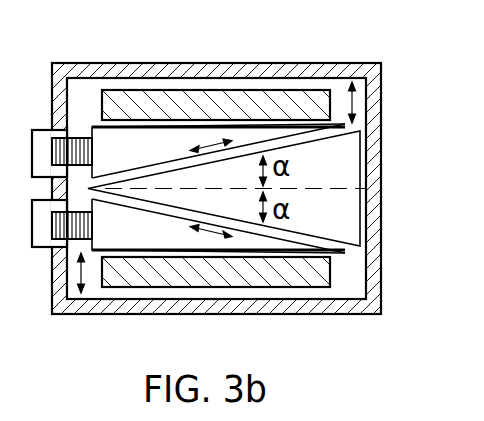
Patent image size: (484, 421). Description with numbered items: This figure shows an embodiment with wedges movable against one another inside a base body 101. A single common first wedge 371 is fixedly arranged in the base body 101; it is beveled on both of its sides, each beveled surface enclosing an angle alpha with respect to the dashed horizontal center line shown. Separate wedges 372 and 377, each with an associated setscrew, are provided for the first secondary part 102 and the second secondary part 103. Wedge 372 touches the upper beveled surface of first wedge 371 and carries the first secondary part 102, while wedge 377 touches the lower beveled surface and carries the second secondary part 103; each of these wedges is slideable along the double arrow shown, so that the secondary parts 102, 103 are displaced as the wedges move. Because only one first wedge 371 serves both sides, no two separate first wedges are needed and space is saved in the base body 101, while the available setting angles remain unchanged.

The base body 101 is at (372, 195).
The first secondary part 102 is at (292, 102).
The second secondary part 103 is at (284, 290).
The first wedge 371 is at (355, 157).
The wedge 372 is at (89, 134).
The wedge 377 is at (305, 241).